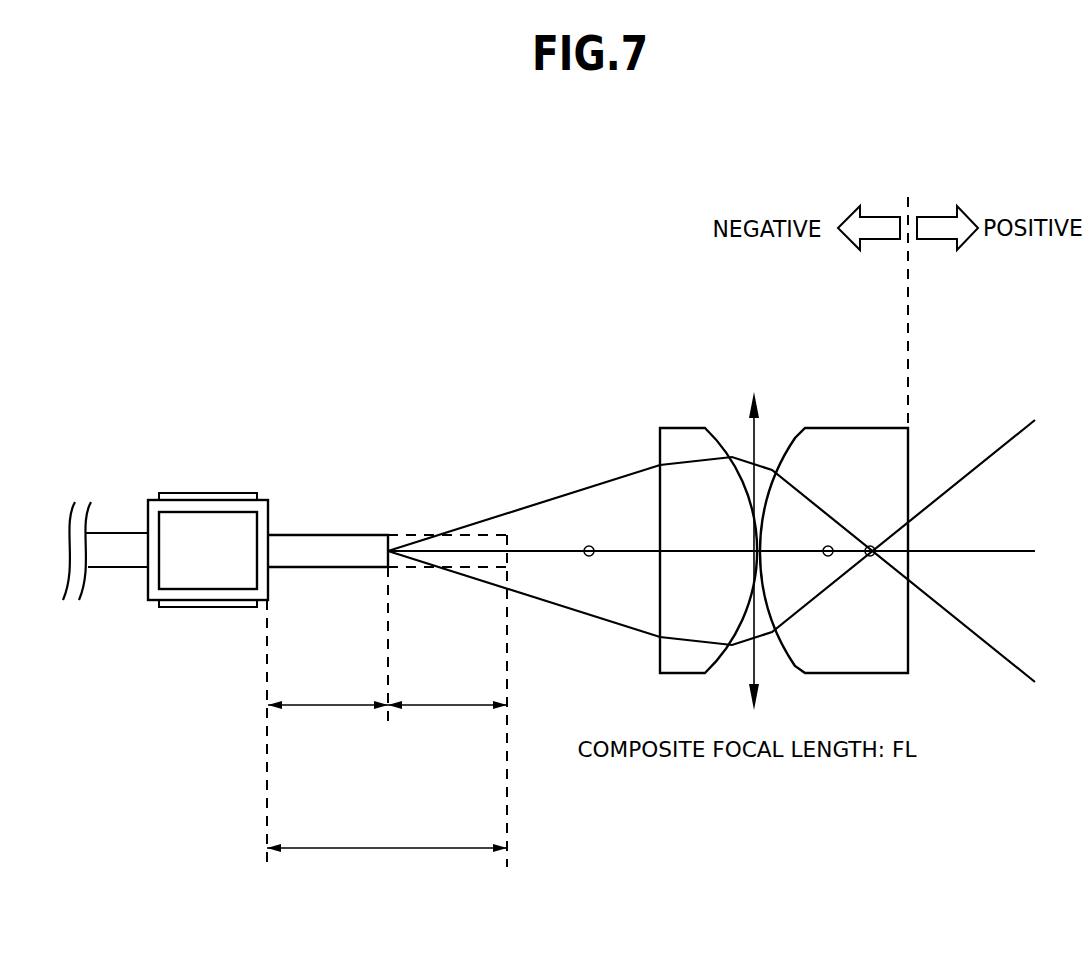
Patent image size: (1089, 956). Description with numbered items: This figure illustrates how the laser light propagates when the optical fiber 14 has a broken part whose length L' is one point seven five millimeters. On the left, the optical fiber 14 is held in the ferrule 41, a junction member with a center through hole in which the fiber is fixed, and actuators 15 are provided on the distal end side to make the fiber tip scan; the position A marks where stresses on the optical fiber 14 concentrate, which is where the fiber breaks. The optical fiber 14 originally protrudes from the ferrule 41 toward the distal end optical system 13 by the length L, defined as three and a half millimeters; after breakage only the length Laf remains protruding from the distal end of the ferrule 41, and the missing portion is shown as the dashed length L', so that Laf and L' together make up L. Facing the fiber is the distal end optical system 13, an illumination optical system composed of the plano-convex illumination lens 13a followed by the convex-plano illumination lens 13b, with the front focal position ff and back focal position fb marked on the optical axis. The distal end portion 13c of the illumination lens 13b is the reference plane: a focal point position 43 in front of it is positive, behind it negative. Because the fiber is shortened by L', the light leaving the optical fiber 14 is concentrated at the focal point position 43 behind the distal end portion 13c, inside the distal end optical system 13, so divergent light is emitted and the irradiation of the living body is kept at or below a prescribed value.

The distal end optical system 13 is at (783, 472).
The illumination lens 13a is at (688, 427).
The illumination lens 13b is at (834, 506).
The distal end portion 13c is at (910, 385).
The optical fiber 14 is at (373, 535).
The actuators 15 is at (175, 518).
The ferrule 41 is at (265, 500).
The focal point position 43 is at (870, 546).
The position where stresses concentrate A is at (317, 524).
The front focal position ff is at (589, 546).
The back focal position fb is at (828, 546).
The length of protrusion of the optical fiber L is at (387, 804).
The length of the optical fiber protruded from the distal end of the ferrule Laf is at (330, 703).
The length of the broken part of the optical fiber L' is at (447, 661).